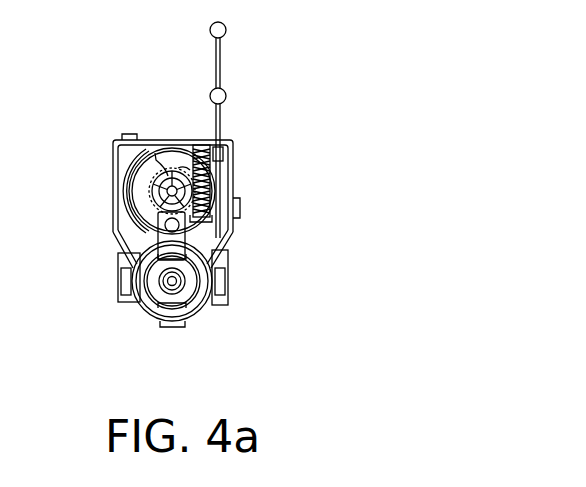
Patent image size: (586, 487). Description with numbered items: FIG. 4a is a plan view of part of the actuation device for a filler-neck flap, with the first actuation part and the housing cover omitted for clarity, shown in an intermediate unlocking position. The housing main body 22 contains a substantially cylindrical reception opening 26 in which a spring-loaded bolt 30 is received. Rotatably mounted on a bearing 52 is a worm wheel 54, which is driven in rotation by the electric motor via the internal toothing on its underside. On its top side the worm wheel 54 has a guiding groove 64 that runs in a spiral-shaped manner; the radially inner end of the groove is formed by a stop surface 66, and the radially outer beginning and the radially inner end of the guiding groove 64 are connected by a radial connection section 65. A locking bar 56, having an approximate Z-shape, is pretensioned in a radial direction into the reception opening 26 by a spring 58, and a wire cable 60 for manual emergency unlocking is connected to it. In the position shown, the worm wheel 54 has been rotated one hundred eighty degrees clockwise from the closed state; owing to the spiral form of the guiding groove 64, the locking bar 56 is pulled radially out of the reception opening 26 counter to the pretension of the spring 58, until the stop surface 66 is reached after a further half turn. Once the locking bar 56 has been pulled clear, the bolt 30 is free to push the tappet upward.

The housing main body 22 is at (115, 167).
The cylindrical reception opening 26 is at (150, 298).
The bolt 30 is at (184, 296).
The bearing 52 is at (215, 243).
The worm wheel 54 is at (155, 153).
The locking bar 56 is at (150, 246).
The spring 58 is at (197, 150).
The wire cable 60 is at (222, 62).
The guiding groove 64 is at (140, 185).
The radial connection section 65 is at (223, 153).
The stop surface 66 is at (176, 174).